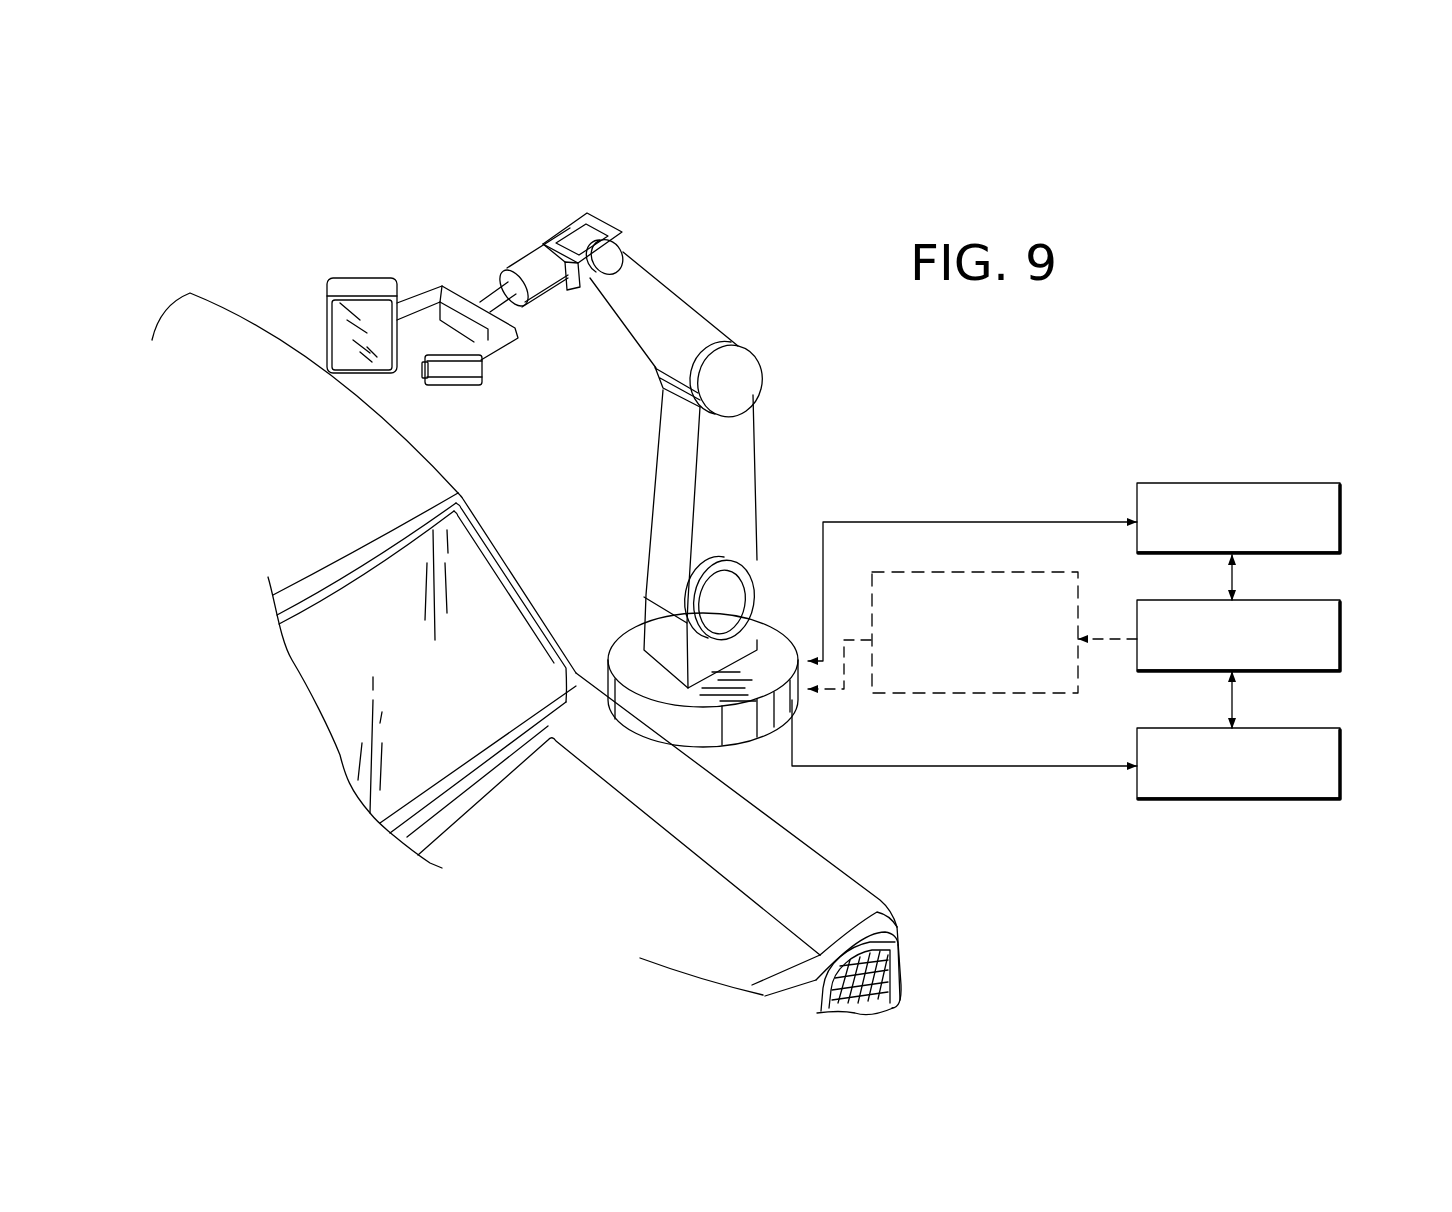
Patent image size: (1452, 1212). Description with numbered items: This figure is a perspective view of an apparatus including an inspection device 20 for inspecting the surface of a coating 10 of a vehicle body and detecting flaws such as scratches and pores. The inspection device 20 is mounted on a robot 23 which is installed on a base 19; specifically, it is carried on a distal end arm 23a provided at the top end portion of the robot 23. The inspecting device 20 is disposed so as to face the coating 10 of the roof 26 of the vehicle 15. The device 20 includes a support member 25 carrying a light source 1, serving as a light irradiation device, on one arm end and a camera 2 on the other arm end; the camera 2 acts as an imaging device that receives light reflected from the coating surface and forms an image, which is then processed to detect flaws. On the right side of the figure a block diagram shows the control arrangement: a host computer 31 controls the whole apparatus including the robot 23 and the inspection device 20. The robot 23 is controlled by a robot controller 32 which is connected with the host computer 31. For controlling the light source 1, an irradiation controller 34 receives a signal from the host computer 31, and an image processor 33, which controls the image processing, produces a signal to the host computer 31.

The light source 1 is at (358, 287).
The camera 2 is at (462, 381).
The coating 10 is at (430, 470).
The vehicle 15 is at (588, 860).
The base 19 is at (775, 632).
The inspection device 20 is at (454, 297).
The robot 23 is at (706, 499).
The distal end arm 23a is at (527, 270).
The support member 25 is at (507, 347).
The roof 26 is at (265, 376).
The host computer 31 is at (1276, 600).
The robot controller 32 is at (1260, 484).
The image processor 33 is at (1284, 724).
The irradiation controller 34 is at (1001, 571).